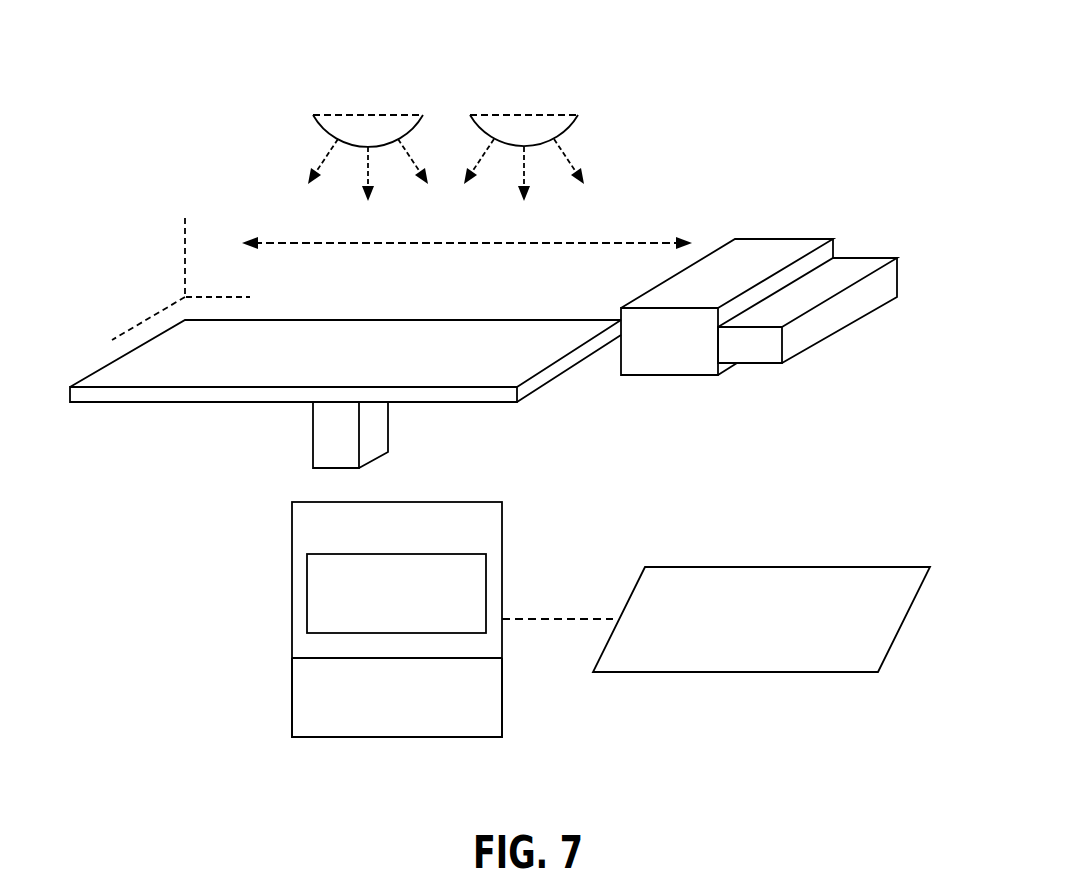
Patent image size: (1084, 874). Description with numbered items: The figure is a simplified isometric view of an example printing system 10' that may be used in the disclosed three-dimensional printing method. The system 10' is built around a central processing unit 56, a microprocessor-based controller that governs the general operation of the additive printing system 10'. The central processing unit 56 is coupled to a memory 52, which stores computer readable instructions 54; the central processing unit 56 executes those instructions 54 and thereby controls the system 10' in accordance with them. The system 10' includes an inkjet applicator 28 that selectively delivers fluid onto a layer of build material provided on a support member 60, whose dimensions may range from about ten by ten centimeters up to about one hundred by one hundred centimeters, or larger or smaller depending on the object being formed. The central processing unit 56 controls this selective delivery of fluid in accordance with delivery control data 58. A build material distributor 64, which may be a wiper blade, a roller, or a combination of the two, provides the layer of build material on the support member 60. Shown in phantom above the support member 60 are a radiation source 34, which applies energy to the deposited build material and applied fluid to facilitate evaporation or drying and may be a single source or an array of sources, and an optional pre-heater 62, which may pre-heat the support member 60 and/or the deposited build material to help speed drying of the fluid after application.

The printing system 10' is at (483, 235).
The pre-heater 62 is at (367, 114).
The radiation source 34 is at (523, 114).
The support member 60 is at (402, 318).
The inkjet applicator 28 is at (783, 238).
The build material distributor 64 is at (862, 258).
The memory 52 is at (307, 528).
The computer readable instructions 54 is at (307, 594).
The central processing unit 56 is at (292, 697).
The delivery control data 58 is at (788, 567).